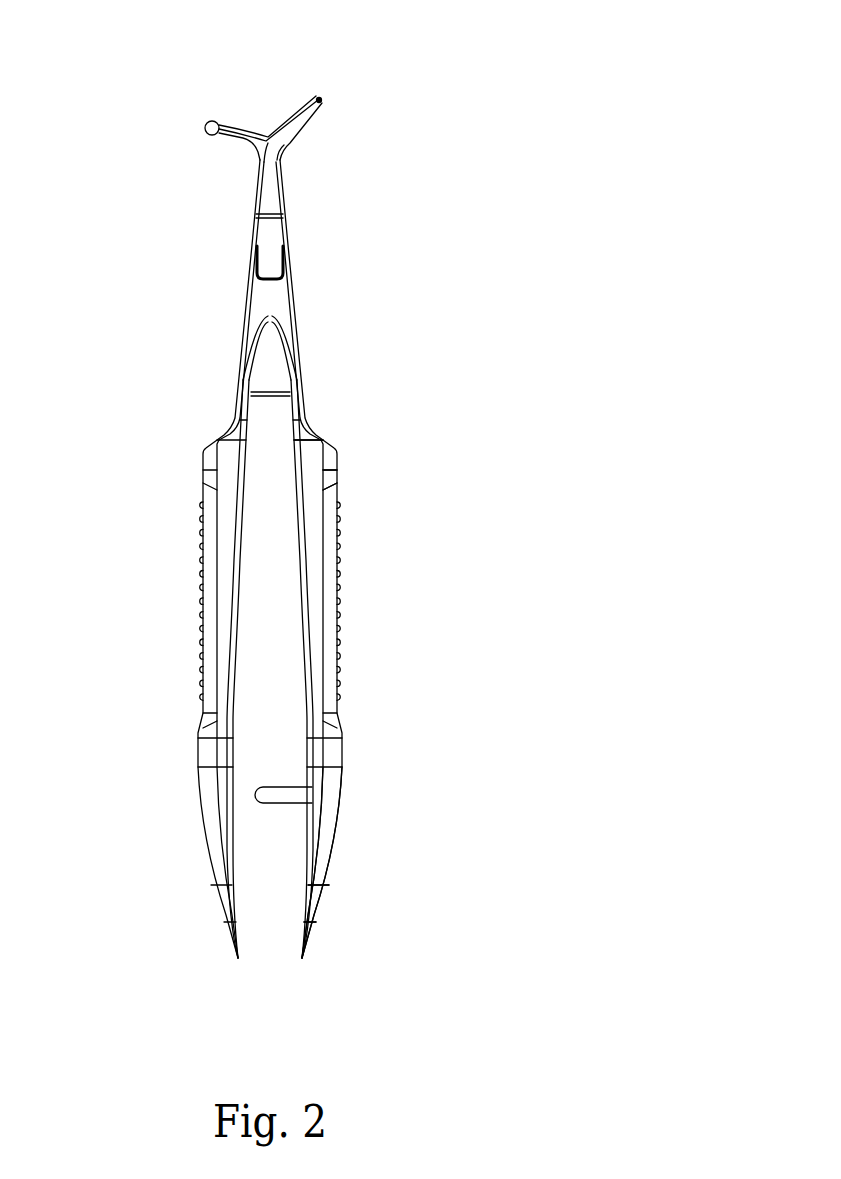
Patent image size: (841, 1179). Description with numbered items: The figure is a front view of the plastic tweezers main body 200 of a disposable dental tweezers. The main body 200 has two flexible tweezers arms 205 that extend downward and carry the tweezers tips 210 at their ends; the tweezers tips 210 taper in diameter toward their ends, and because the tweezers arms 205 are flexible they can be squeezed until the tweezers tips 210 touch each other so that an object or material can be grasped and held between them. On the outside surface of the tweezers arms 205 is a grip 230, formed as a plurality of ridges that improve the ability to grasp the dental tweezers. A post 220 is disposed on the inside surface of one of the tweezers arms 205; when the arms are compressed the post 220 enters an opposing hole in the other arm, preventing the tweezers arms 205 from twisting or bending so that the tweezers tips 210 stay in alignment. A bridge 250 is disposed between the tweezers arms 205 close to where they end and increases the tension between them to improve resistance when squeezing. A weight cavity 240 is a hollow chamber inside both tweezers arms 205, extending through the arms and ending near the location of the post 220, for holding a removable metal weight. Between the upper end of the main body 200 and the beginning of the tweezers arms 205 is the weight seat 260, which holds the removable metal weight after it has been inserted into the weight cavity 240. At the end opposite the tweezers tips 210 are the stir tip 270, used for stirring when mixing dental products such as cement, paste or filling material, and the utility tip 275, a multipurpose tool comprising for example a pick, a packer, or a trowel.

The tweezers main body 200 is at (358, 182).
The tweezers arms 205 is at (213, 585).
The tweezers tips 210 is at (317, 912).
The post 220 is at (303, 795).
The grip 230 is at (338, 636).
The weight cavity 240 is at (312, 492).
The bridge 250 is at (276, 393).
The weight seat 260 is at (272, 263).
The stir tip 270 is at (205, 130).
The utility tip 275 is at (323, 97).